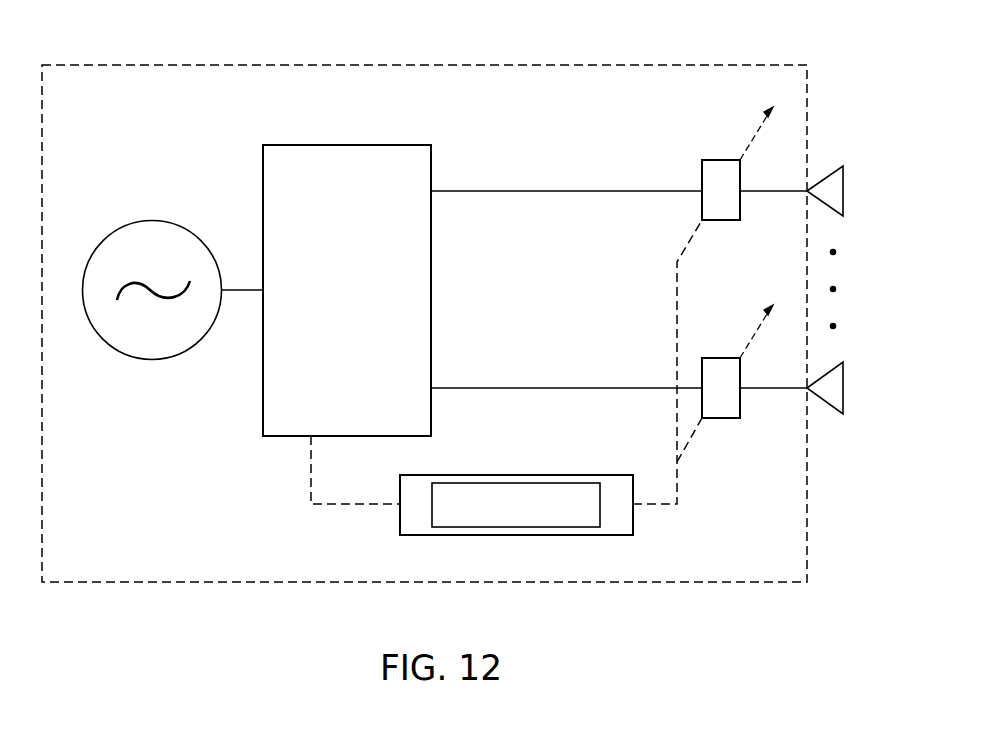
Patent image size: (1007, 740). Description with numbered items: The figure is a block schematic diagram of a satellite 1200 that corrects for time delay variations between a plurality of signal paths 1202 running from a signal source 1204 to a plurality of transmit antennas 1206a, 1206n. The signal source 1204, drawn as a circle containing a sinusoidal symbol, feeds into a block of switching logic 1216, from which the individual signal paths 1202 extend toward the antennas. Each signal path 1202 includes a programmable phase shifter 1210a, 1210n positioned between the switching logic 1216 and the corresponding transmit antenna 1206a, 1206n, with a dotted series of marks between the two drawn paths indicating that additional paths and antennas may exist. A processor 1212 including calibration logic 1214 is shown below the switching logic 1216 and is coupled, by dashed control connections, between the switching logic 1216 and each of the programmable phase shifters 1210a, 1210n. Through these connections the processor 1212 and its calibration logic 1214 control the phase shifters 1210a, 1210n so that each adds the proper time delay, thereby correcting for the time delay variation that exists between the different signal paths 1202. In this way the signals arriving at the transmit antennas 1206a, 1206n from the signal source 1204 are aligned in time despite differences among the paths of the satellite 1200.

The satellite 1200 is at (525, 65).
The signal paths 1202 is at (528, 191).
The signal source 1204 is at (150, 221).
The transmit antenna 1206a is at (843, 178).
The transmit antenna 1206n is at (843, 376).
The programmable phase shifter 1210a is at (720, 220).
The programmable phase shifter 1210n is at (720, 418).
The processor 1212 is at (497, 475).
The calibration logic 1214 is at (556, 483).
The switching logic 1216 is at (386, 145).